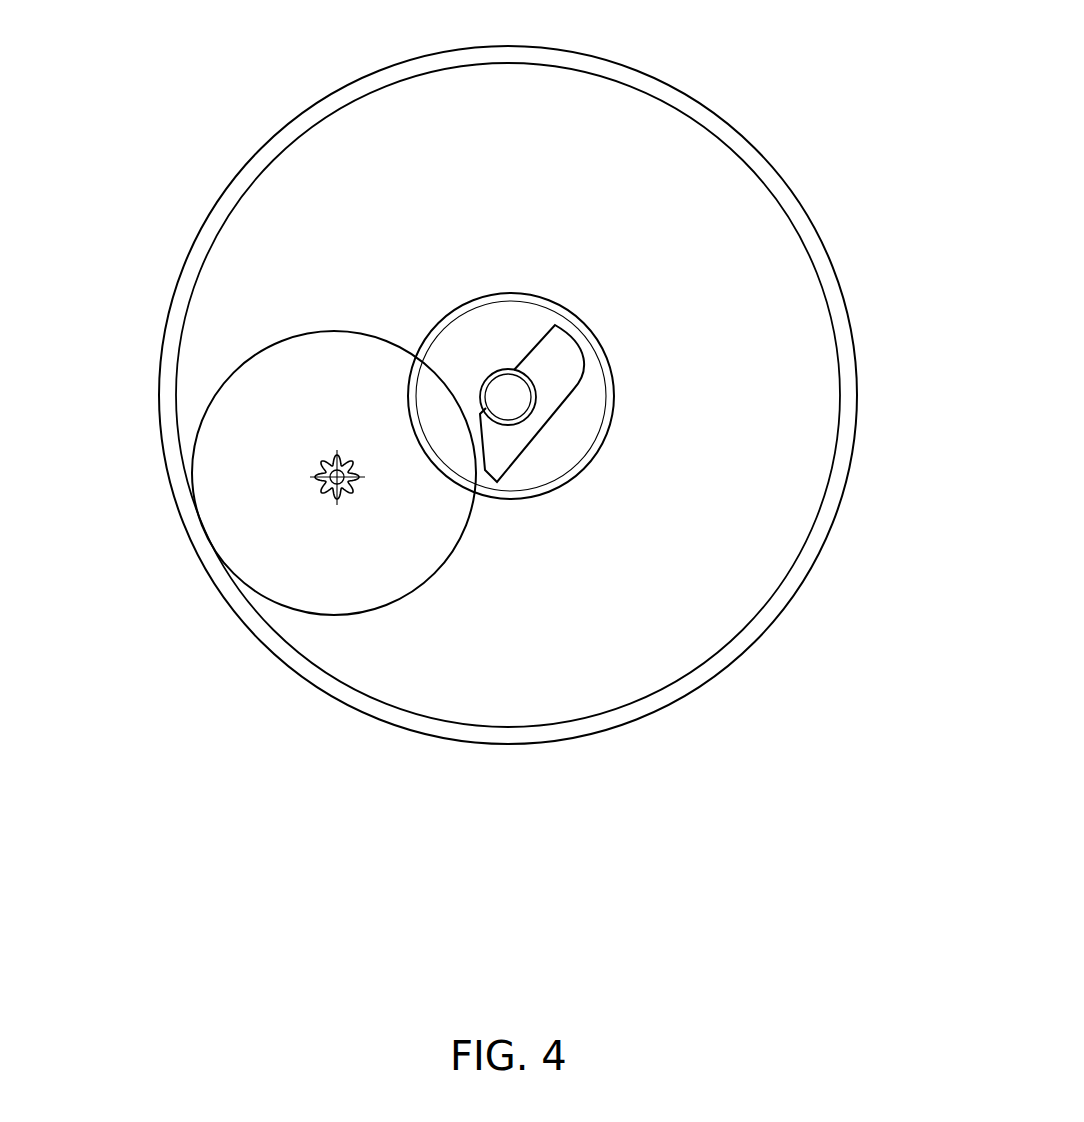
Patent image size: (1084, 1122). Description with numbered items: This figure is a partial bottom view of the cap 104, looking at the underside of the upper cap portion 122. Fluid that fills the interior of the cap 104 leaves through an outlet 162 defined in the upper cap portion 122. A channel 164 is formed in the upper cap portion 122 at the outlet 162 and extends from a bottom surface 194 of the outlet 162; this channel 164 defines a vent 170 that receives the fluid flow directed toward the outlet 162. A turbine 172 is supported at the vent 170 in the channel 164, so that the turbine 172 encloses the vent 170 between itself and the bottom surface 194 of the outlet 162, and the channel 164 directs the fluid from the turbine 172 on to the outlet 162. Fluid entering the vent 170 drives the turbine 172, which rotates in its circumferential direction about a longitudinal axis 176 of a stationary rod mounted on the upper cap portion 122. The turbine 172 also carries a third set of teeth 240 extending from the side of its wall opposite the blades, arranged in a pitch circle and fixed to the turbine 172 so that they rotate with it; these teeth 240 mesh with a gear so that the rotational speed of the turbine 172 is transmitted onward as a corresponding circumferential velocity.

The cap 104 is at (705, 107).
The upper cap portion 122 is at (718, 212).
The outlet 162 is at (598, 335).
The channel 164 is at (548, 373).
The bottom surface 194 is at (557, 442).
The vent 170 is at (480, 467).
The turbine 172 is at (285, 543).
The longitudinal axis 176 is at (327, 463).
The third set of teeth 240 is at (350, 493).